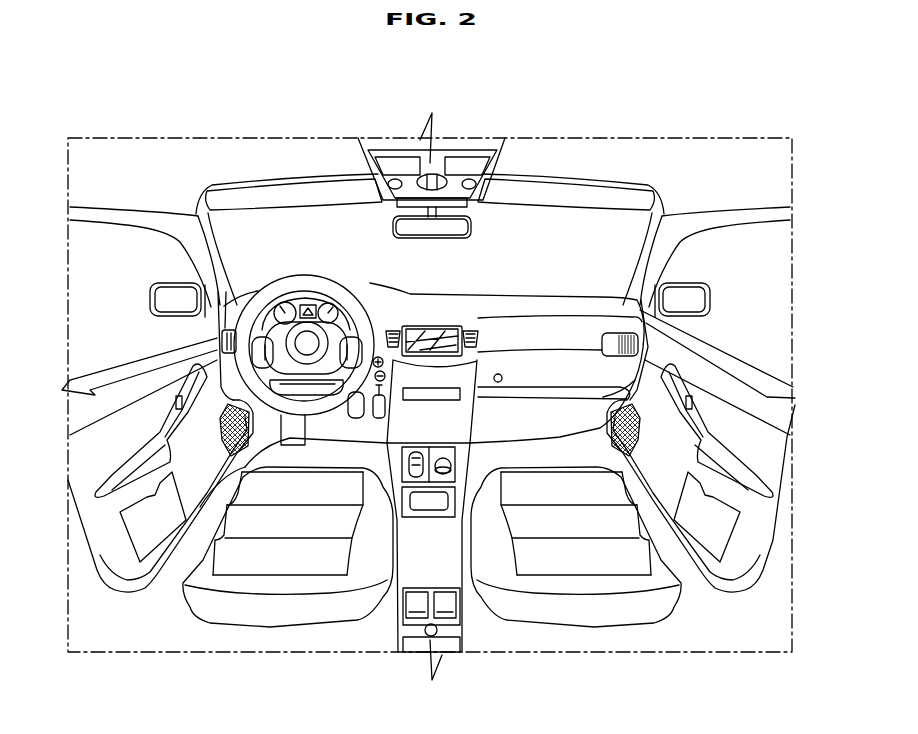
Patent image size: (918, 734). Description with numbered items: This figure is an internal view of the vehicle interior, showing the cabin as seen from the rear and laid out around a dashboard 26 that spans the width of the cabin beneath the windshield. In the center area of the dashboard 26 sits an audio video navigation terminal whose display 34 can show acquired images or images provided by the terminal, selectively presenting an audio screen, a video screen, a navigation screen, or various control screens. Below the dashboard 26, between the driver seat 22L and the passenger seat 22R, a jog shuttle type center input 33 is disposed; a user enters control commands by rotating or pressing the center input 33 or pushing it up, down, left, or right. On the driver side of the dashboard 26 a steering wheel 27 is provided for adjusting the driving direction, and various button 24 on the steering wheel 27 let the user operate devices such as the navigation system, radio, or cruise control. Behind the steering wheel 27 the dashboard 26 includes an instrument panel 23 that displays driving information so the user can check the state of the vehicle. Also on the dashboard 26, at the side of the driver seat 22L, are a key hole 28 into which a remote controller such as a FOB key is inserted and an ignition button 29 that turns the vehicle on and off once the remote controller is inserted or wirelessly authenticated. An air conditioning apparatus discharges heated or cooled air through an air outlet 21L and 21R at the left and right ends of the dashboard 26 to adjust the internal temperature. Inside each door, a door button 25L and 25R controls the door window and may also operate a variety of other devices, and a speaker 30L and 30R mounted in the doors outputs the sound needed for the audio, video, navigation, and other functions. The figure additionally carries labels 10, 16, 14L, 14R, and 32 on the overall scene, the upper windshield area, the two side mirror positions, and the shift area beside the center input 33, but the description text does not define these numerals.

The vehicle interior 10 is at (258, 120).
The windshield 16 is at (530, 218).
The left side mirror 14L is at (170, 293).
The right side mirror 14R is at (692, 293).
The air outlet 21L is at (228, 340).
The air outlet 21R is at (645, 336).
The driver seat 22L is at (268, 612).
The passenger seat 22R is at (581, 612).
The instrument panel 23 is at (318, 300).
The button 24 is at (273, 327).
The door button 25L is at (178, 398).
The door button 25R is at (680, 400).
The dashboard 26 is at (572, 305).
The steering wheel 27 is at (301, 283).
The key hole 28 is at (378, 350).
The ignition button 29 is at (376, 392).
The speaker 30L is at (221, 432).
The speaker 30R is at (643, 435).
The gear shift lever 32 is at (412, 463).
The center input 33 is at (447, 465).
The display 34 is at (425, 328).